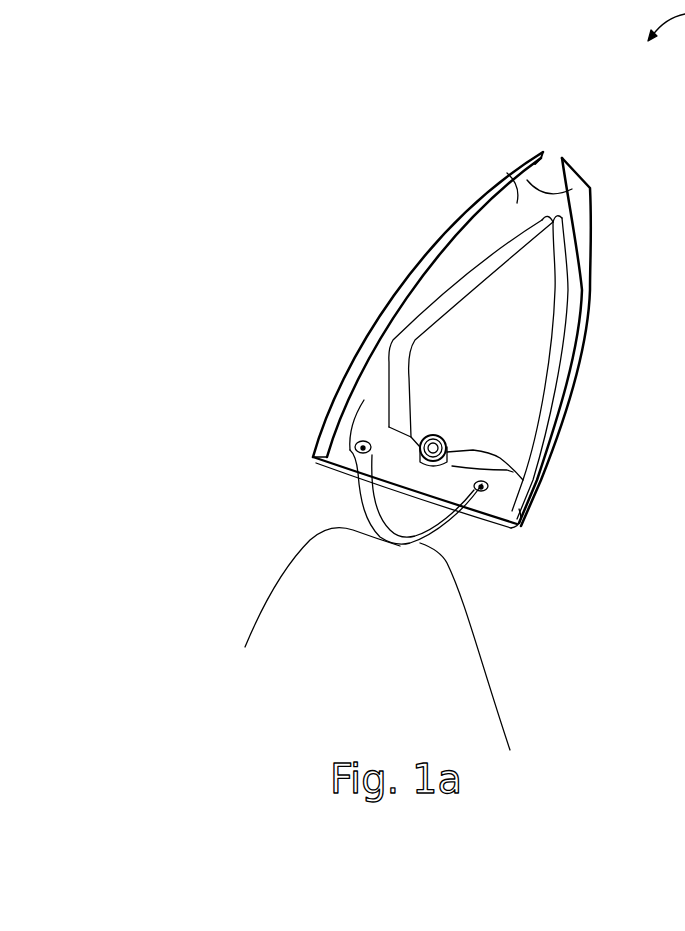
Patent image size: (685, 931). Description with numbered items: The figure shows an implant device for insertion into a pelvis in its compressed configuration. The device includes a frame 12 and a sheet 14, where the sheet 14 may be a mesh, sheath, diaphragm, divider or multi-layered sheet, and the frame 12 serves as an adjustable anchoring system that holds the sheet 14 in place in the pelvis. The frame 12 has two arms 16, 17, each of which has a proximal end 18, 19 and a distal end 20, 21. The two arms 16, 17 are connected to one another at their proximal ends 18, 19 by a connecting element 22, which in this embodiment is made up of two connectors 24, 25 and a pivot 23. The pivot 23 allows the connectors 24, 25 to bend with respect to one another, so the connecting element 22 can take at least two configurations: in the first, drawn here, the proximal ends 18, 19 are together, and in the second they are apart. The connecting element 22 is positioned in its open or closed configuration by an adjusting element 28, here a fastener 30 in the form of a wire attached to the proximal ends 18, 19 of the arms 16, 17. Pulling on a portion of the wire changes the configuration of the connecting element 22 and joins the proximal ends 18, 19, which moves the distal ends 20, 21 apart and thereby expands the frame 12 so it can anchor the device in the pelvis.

The frame 12 is at (380, 390).
The sheet 14 is at (514, 174).
The arm 16 is at (459, 287).
The arm 17 is at (562, 308).
The proximal end 18 is at (365, 428).
The proximal end 19 is at (515, 475).
The distal end 20 is at (541, 220).
The distal end 21 is at (556, 247).
The connecting element 22 is at (436, 437).
The pivot 23 is at (460, 457).
The connector 24 is at (407, 437).
The connector 25 is at (480, 453).
The adjusting element 28 is at (462, 519).
The fastener 30 is at (448, 530).